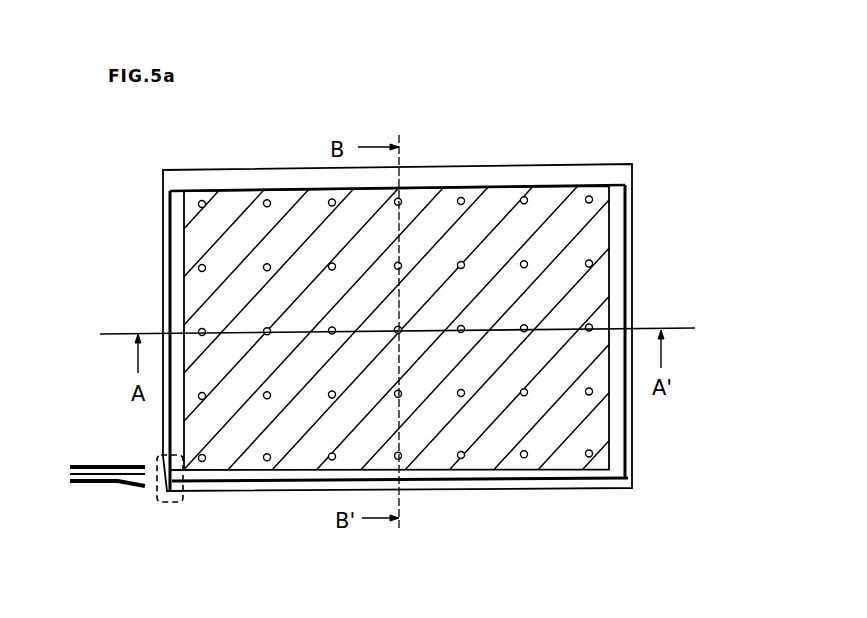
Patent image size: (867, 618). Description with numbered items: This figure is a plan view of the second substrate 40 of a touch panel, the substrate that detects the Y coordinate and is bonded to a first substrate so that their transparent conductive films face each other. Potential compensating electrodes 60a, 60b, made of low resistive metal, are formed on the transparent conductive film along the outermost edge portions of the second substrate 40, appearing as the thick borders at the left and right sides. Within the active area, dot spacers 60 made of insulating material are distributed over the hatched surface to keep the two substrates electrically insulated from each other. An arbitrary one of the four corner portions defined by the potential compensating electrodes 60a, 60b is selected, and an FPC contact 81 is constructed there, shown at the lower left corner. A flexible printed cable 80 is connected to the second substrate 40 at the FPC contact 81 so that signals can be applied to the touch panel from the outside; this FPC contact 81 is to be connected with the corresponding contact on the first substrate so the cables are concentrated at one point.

The second substrate 40 is at (587, 58).
The dot spacers 60 is at (433, 328).
The potential compensating electrode 60a is at (173, 283).
The potential compensating electrode 60b is at (620, 261).
The flexible printed cable 80 is at (82, 463).
The FPC contact 81 is at (173, 503).